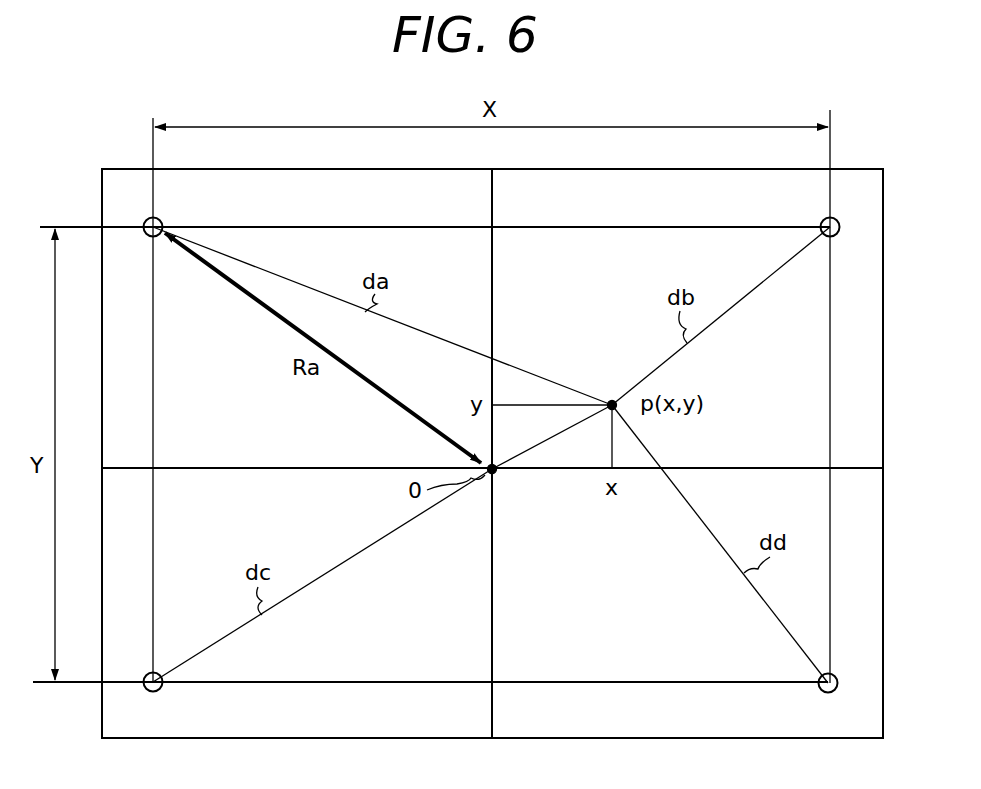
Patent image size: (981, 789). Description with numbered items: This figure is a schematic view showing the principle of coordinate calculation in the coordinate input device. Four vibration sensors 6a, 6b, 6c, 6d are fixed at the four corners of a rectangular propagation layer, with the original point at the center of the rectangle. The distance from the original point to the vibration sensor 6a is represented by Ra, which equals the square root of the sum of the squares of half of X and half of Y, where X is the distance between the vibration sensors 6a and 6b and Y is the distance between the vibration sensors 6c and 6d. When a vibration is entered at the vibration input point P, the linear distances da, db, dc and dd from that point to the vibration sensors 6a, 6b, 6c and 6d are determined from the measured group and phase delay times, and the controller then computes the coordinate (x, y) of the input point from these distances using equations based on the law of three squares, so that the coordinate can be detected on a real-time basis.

The vibration sensor 6a is at (170, 217).
The vibration sensor 6b is at (816, 217).
The vibration sensor 6c is at (168, 696).
The vibration sensor 6d is at (813, 696).